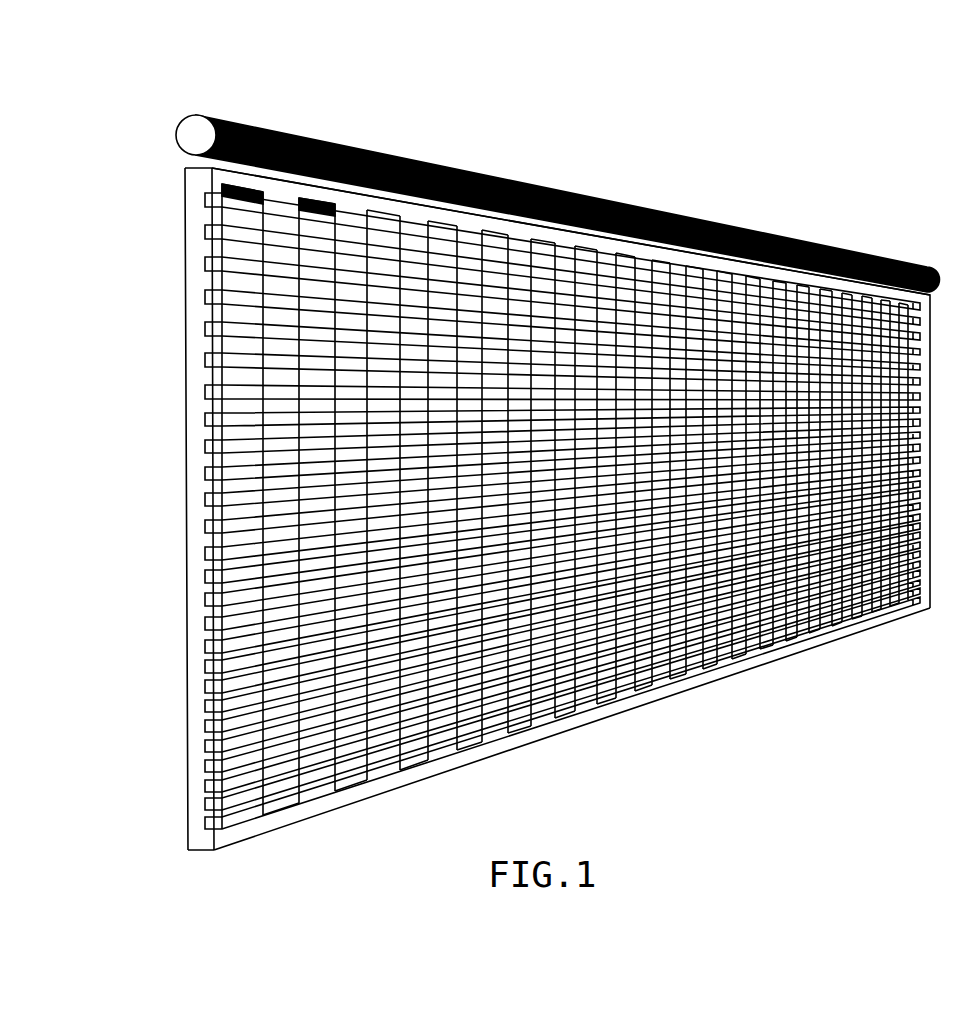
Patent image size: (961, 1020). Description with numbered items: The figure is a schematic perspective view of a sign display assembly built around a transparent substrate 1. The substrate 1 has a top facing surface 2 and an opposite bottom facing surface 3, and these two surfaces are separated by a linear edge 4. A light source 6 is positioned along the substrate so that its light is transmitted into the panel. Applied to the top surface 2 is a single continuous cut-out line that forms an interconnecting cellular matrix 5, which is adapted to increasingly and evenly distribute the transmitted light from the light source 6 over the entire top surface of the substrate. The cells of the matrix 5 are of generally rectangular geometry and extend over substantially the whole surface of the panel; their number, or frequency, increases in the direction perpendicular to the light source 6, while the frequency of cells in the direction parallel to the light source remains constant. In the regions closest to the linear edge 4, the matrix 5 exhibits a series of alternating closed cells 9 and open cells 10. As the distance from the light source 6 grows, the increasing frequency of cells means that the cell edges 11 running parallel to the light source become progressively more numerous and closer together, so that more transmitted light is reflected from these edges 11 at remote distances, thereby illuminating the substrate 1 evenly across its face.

The transparent substrate 1 is at (185, 381).
The top facing surface 2 is at (685, 258).
The bottom facing surface 3 is at (197, 782).
The linear edge 4 is at (189, 640).
The single continuous line matrix 5 is at (204, 531).
The light source 6 is at (187, 124).
The closed cell 9 is at (313, 202).
The open cell 10 is at (413, 224).
The cell edges 11 is at (558, 250).